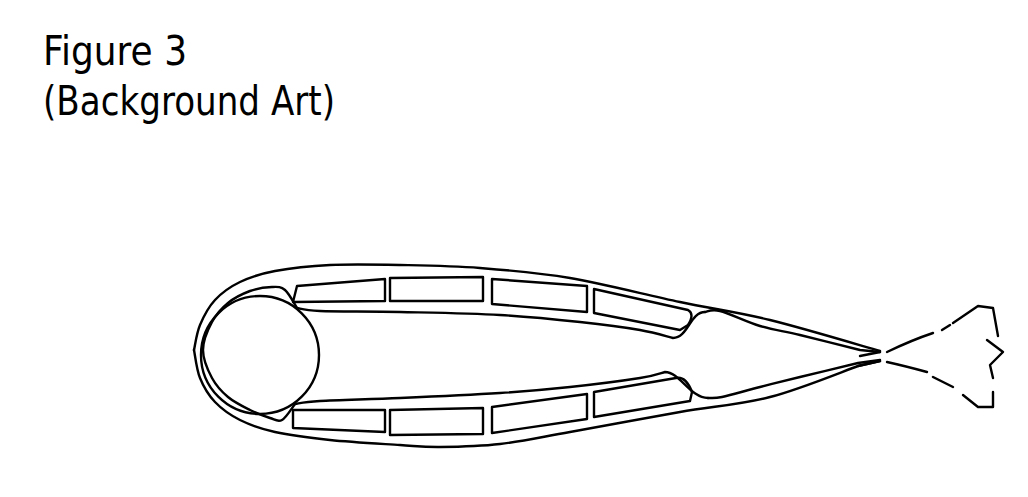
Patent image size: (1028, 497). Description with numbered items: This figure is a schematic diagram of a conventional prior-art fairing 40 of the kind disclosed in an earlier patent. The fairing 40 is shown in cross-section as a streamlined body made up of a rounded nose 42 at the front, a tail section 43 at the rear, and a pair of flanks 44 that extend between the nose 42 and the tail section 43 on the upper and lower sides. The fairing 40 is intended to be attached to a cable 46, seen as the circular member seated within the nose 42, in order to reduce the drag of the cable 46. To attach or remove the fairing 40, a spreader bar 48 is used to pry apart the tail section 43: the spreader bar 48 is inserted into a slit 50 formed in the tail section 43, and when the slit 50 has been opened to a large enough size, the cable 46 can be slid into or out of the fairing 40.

The fairing 40 is at (598, 318).
The nose 42 is at (265, 283).
The tail section 43 is at (820, 330).
The flanks 44 is at (463, 265).
The cable 46 is at (268, 320).
The spreader bar 48 is at (963, 352).
The slit 50 is at (878, 361).